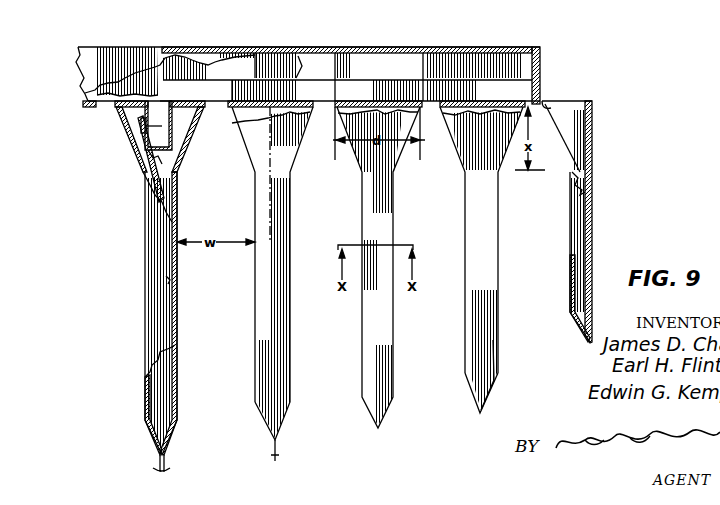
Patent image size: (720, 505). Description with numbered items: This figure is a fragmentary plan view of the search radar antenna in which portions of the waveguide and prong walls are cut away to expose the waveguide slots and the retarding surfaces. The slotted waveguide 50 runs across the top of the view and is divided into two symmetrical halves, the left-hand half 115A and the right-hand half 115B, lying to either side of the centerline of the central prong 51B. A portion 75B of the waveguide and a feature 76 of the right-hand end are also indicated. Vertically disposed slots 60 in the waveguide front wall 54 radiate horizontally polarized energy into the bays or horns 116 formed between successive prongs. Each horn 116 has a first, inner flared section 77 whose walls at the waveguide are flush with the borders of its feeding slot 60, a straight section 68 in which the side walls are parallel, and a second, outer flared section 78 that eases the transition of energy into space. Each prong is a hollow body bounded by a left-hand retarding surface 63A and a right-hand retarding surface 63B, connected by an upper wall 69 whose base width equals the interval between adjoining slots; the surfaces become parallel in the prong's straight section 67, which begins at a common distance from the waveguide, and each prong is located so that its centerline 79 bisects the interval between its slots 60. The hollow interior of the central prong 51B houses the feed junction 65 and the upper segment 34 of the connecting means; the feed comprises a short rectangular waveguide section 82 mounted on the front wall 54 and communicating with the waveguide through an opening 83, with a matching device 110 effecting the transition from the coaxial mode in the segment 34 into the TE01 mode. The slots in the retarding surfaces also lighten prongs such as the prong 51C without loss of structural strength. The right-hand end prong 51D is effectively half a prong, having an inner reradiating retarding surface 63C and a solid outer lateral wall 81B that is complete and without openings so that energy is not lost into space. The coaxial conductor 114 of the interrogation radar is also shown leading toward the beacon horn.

The waveguide 50 is at (146, 44).
The left-hand half of the waveguide 115A is at (90, 46).
The right-hand half of the waveguide 115B is at (527, 46).
The base plate 75B is at (541, 74).
The waveguide front wall 54 is at (383, 100).
The opening in the waveguide front wall 83 is at (166, 100).
The waveguide slot 60 is at (421, 106).
The central prong 51B is at (146, 294).
The upper wall 69 is at (168, 278).
The short rectangular waveguide section 82 is at (174, 132).
The matching device 110 is at (147, 128).
The upper segment of the connecting means 34 is at (163, 172).
The feed junction 65 is at (158, 157).
The left-hand retarding surface 63A is at (145, 393).
The right-hand retarding surface 63B is at (178, 409).
The coaxial conductor of the interrogation radar 114 is at (158, 466).
The straight section of the prong 67 is at (255, 269).
The prong 51C is at (285, 418).
The prong centerline 79 is at (272, 456).
The first (inner) flared section of the horn 77 is at (436, 177).
The straight section of the horn 68 is at (434, 329).
The second (outer) flared section of the horn 78 is at (438, 402).
The bay or horn 116 is at (420, 423).
The fin top edge 76 is at (549, 104).
The right-hand end prong 51D is at (591, 229).
The outer lateral wall 81B is at (591, 167).
The retarding surface of end prong 63C is at (569, 278).